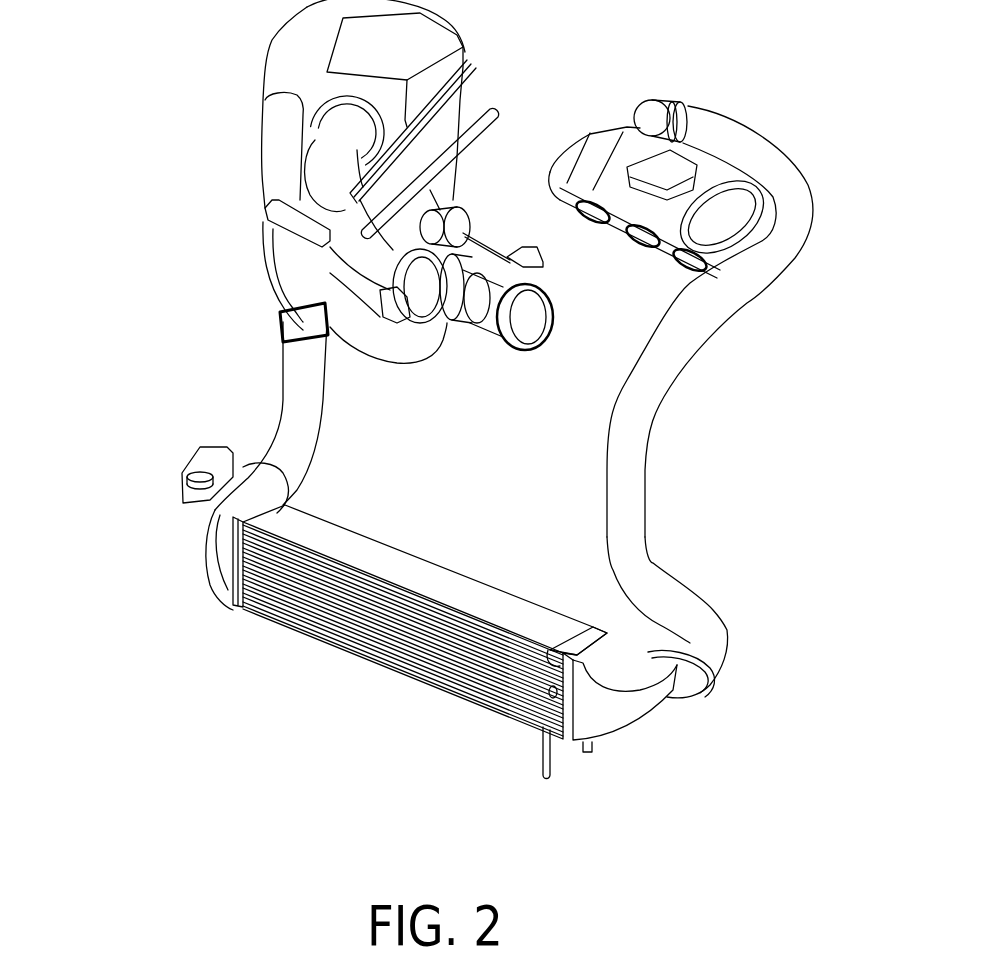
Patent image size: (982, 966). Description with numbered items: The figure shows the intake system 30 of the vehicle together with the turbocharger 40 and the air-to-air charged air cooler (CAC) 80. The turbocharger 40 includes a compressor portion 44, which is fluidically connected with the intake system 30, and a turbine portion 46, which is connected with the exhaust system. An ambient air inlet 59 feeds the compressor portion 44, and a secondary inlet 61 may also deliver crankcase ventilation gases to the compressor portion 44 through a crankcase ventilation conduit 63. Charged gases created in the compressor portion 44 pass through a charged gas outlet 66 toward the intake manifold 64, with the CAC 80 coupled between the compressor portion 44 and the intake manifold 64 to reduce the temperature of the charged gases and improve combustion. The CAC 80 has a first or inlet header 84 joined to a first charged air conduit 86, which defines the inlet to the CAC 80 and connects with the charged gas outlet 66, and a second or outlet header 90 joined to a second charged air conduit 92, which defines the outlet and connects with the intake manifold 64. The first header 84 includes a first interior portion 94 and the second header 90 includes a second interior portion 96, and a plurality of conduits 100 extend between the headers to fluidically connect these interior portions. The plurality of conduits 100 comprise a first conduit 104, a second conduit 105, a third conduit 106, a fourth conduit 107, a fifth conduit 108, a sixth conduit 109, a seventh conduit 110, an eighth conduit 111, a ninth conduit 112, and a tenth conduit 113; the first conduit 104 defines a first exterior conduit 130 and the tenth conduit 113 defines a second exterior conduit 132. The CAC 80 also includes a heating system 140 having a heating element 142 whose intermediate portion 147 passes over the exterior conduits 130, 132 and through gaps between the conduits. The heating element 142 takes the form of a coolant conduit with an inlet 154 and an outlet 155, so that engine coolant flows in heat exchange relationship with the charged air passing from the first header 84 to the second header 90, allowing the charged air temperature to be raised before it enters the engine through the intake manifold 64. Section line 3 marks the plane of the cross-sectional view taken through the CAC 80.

The intake system 30 is at (713, 444).
The turbocharger 40 is at (471, 374).
The compressor portion 44 is at (437, 340).
The turbine portion 46 is at (500, 350).
The ambient air inlet 59 is at (240, 262).
The secondary inlet 61 is at (490, 94).
The crankcase ventilation conduit 63 is at (455, 133).
The intake manifold 64 is at (598, 116).
The charged gas outlet 66 is at (431, 338).
The air-to-air charged air cooler 80 is at (396, 670).
The first header 84 is at (207, 568).
The first charged air conduit 86 is at (281, 357).
The second header 90 is at (652, 721).
The second charged air conduit 92 is at (647, 522).
The first interior portion 94 is at (207, 540).
The second interior portion 96 is at (653, 697).
The plurality of conduits 100 is at (374, 637).
The first conduit 104 is at (247, 597).
The second conduit 105 is at (263, 600).
The third conduit 106 is at (273, 620).
The fourth conduit 107 is at (287, 632).
The fifth conduit 108 is at (300, 643).
The sixth conduit 109 is at (313, 645).
The seventh conduit 110 is at (347, 605).
The eighth conduit 111 is at (387, 630).
The ninth conduit 112 is at (412, 640).
The tenth conduit 113 is at (398, 663).
The first exterior conduit 130 is at (530, 620).
The second exterior conduit 132 is at (517, 717).
The heating system 140 is at (540, 777).
The heating element 142 is at (593, 747).
The intermediate portion 147 is at (600, 630).
The inlet 154 is at (533, 757).
The outlet 155 is at (597, 757).
The section line 3- 3 is at (588, 578).